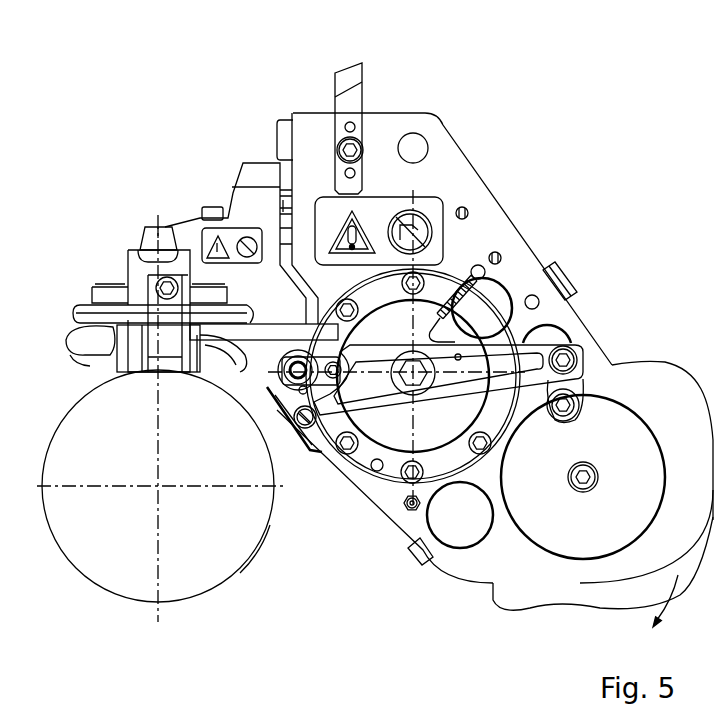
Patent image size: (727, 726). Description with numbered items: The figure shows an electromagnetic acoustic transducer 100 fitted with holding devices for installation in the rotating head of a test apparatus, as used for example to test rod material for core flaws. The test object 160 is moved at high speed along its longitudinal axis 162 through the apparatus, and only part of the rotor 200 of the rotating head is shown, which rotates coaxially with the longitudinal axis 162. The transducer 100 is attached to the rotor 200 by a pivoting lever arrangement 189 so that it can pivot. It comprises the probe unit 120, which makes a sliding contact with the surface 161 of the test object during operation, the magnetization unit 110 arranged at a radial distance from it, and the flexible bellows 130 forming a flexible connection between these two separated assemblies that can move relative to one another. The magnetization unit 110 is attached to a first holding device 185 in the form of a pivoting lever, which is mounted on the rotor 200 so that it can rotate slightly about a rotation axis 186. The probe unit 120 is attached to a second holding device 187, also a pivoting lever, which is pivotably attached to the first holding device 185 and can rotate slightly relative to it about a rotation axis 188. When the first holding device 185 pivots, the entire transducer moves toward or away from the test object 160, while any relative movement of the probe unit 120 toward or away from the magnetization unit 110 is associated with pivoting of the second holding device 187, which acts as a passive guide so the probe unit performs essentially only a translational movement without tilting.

The electromagnetic acoustic transducer 100 is at (180, 119).
The magnetization unit 110 is at (78, 288).
The probe unit 120 is at (110, 362).
The flexible bellows 130 is at (78, 343).
The test object 160 is at (224, 548).
The surface of the test object 161 is at (263, 540).
The longitudinal axis 162 is at (160, 485).
The first holding device 185 is at (461, 190).
The rotation axis 186 is at (418, 380).
The second holding device 187 is at (268, 388).
The rotation axis 188 is at (298, 362).
The pivoting lever arrangement 189 is at (550, 205).
The rotor 200 is at (686, 392).